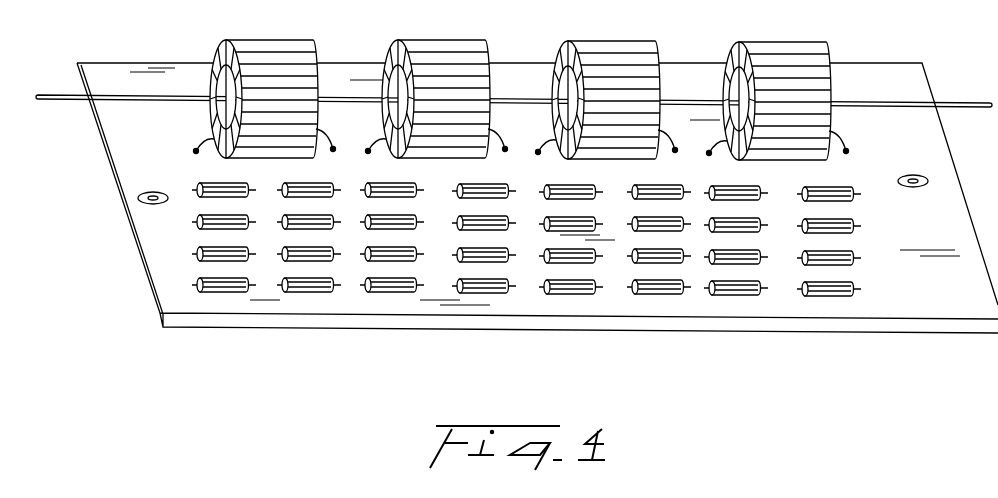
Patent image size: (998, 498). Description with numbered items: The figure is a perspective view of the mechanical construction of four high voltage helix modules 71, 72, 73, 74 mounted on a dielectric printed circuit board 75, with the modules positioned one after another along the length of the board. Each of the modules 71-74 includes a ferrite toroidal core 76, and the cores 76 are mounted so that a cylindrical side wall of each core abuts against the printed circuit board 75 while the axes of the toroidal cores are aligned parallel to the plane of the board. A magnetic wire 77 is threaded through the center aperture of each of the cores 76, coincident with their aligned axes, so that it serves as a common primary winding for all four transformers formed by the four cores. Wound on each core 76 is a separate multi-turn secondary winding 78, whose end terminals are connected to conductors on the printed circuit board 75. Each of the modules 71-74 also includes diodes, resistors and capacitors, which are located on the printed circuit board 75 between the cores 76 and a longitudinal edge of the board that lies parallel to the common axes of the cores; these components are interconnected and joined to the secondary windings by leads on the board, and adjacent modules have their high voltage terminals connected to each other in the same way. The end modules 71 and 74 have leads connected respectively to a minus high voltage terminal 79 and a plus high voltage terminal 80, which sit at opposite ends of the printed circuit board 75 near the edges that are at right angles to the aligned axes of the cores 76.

The high voltage helix module 71 is at (192, 336).
The high voltage helix module 72 is at (365, 338).
The high voltage helix module 73 is at (542, 340).
The high voltage helix module 74 is at (708, 341).
The dielectric printed circuit board 75 is at (128, 66).
The ferrite toroidal core 76 is at (278, 48).
The magnetic wire 77 is at (45, 93).
The multi-turn secondary winding 78 is at (243, 42).
The minus high voltage terminal 79 is at (140, 197).
The plus high voltage terminal 80 is at (928, 184).